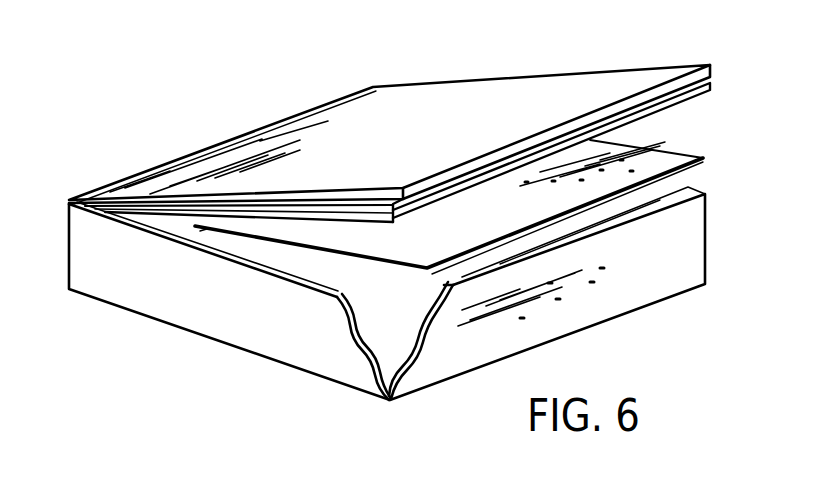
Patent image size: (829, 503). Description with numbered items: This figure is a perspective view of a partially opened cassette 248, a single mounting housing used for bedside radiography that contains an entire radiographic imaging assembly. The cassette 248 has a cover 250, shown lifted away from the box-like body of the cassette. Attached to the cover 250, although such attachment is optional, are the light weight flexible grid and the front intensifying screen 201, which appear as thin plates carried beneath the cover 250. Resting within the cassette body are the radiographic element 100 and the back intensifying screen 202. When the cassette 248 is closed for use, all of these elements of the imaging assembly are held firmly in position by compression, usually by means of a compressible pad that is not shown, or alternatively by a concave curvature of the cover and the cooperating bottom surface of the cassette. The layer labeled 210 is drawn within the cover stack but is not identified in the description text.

The cassette 248 is at (190, 323).
The back intensifying screen 202 is at (392, 402).
The radiographic element 100 is at (489, 237).
The cover 250 is at (519, 90).
The front intensifying screen 201 is at (672, 104).
The layer 210 is at (352, 203).